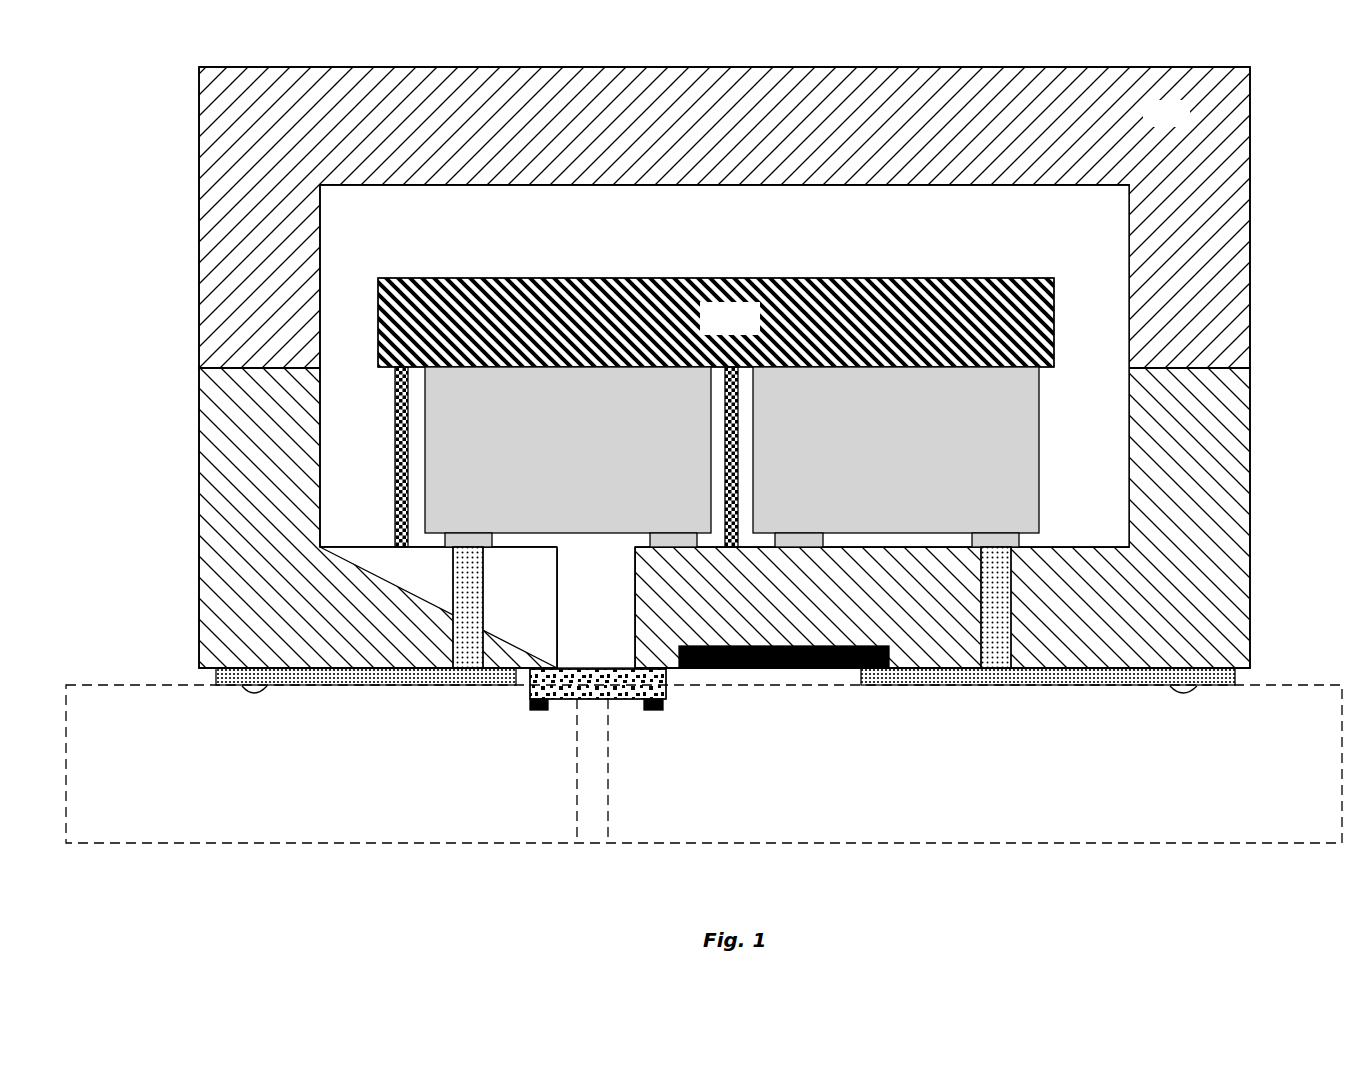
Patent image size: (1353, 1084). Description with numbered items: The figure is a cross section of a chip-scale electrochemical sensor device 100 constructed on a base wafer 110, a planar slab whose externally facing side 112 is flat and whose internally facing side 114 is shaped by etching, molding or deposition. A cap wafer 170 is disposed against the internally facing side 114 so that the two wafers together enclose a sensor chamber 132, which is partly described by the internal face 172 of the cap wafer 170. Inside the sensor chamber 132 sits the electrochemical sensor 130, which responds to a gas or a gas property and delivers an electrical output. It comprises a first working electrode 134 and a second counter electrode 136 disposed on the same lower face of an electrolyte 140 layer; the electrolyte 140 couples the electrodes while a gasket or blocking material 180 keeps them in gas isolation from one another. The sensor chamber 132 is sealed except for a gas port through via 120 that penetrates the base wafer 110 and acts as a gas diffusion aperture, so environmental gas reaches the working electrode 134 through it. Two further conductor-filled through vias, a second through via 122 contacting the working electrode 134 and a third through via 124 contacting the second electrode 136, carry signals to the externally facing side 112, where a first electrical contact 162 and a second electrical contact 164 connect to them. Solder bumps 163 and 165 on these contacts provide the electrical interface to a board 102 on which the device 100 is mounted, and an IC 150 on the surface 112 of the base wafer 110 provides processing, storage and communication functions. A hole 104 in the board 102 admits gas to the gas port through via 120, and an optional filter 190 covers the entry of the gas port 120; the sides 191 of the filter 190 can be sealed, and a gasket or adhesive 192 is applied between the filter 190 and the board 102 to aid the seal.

The electrochemical sensor device 100 is at (165, 87).
The board 102 is at (1302, 824).
The hole 104 is at (590, 788).
The base wafer 110 is at (195, 543).
The externally facing side 112 is at (313, 663).
The internally facing side 114 is at (362, 547).
The gas port through via 120 is at (585, 630).
The second through via 122 is at (468, 643).
The third through via 124 is at (993, 630).
The electrochemical sensor 130 is at (353, 452).
The sensor chamber 132 is at (383, 234).
The first working electrode 134 is at (593, 451).
The second electrode 136 is at (913, 451).
The electrolyte 140 is at (750, 331).
The IC 150 is at (802, 670).
The first electrical contact 162 is at (370, 690).
The solder bump 163 is at (253, 690).
The second electrical contact 164 is at (1112, 690).
The solder bump 165 is at (1185, 693).
The cap wafer 170 is at (1183, 124).
The internal face 172 is at (1062, 190).
The gasket 180 is at (395, 397).
The filter 190 is at (545, 676).
The sides of filter 191 is at (670, 683).
The gasket or adhesive 192 is at (663, 710).